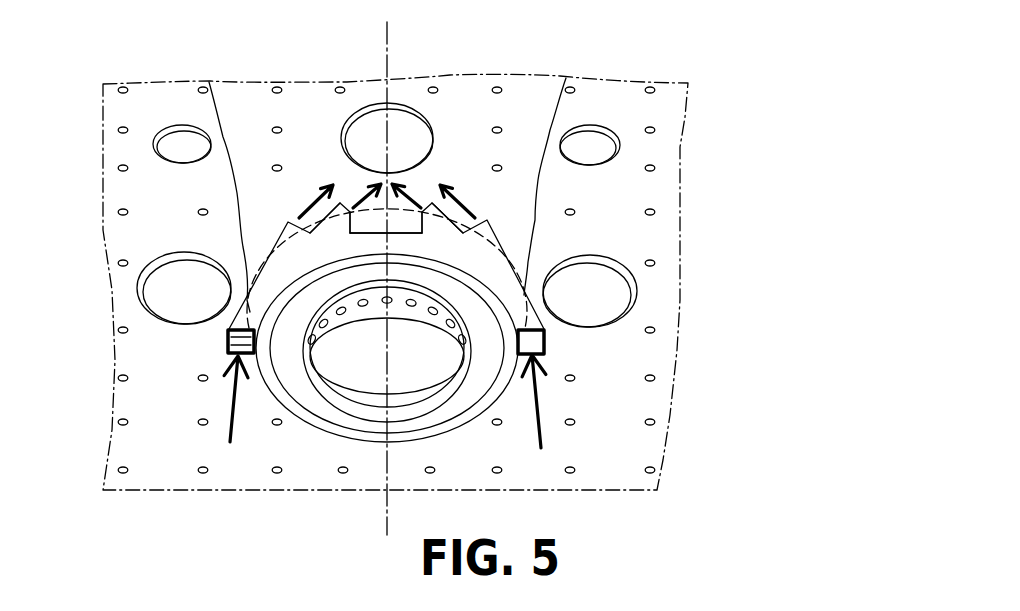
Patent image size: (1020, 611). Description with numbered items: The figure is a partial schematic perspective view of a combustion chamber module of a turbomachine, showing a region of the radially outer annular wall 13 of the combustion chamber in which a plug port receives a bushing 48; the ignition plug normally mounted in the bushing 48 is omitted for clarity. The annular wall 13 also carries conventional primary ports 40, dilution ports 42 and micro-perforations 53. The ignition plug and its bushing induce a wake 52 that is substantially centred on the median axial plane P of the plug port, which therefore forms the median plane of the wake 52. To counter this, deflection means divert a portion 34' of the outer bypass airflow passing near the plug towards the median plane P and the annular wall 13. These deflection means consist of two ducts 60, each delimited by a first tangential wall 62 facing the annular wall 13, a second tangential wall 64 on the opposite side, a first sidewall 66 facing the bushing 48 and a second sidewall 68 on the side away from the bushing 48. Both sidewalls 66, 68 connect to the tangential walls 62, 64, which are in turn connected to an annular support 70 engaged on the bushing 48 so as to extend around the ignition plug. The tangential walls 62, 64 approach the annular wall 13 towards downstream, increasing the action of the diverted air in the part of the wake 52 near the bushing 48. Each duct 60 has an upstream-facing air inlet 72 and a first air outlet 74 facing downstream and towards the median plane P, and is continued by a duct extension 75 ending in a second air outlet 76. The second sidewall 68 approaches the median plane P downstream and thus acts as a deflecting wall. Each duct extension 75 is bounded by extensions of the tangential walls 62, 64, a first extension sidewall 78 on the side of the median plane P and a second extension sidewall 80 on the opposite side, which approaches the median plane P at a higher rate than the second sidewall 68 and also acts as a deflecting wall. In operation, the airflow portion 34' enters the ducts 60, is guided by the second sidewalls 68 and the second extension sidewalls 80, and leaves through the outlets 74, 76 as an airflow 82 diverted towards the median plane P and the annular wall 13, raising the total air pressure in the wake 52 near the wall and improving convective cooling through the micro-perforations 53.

The median axial plane P is at (388, 47).
The radially outer annular wall 13 is at (416, 269).
The portion of the outer bypass airflow 34' is at (343, 440).
The primary ports 40 is at (617, 257).
The dilution ports 42 is at (612, 133).
The bushing 48 is at (438, 395).
The wake 52 is at (552, 107).
The micro-perforations 53 is at (650, 168).
The ducts 60 is at (394, 361).
The first tangential wall 62 is at (389, 440).
The second tangential wall 64 is at (543, 304).
The first sidewall 66 is at (495, 272).
The second sidewall 68 is at (394, 361).
The annular support 70 is at (323, 418).
The air inlet 72 is at (228, 341).
The first air outlet 74 is at (297, 220).
The duct extension 75 is at (353, 202).
The second air outlet 76 is at (347, 208).
The first extension sidewall 78 is at (410, 203).
The second extension sidewall 80 is at (440, 207).
The airflow 82 is at (332, 184).